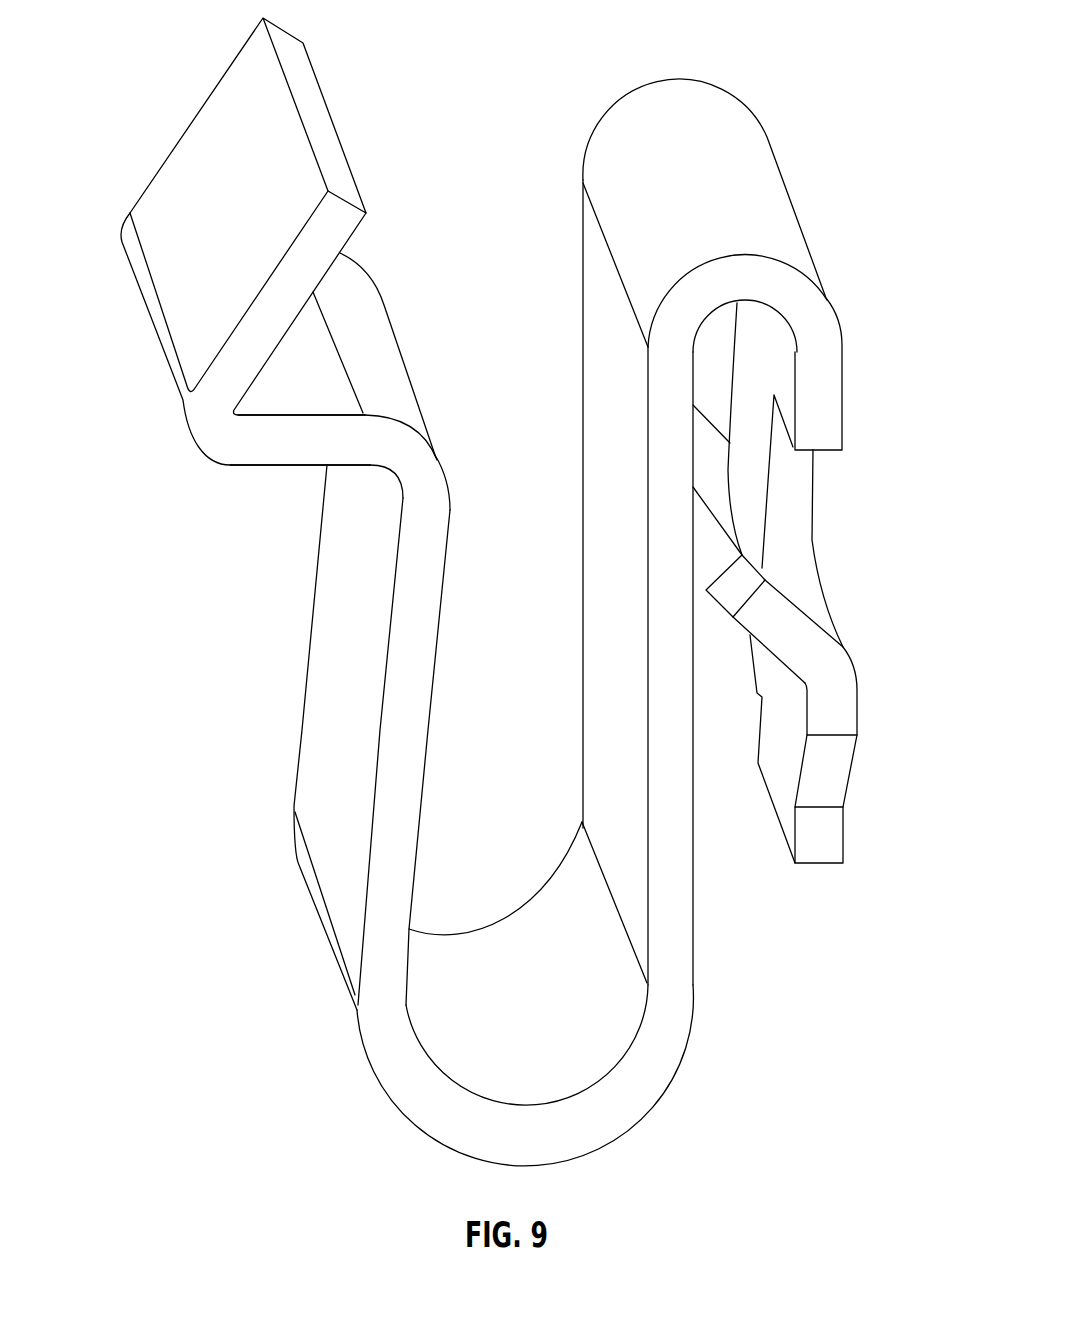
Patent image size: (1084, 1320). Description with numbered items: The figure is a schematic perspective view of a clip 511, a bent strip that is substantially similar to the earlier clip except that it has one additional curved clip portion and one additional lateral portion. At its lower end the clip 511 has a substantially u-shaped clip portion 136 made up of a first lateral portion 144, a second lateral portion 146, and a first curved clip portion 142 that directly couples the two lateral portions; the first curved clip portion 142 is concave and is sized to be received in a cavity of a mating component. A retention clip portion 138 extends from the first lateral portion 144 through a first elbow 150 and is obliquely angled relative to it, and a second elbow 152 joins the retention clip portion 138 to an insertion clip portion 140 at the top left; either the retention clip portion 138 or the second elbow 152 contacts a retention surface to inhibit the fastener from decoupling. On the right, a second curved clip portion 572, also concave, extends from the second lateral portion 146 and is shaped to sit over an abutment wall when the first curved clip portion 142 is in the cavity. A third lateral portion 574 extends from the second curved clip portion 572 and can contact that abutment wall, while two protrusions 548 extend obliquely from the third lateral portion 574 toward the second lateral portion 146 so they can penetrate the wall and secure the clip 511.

The insertion clip portion 140 is at (200, 153).
The second elbow 152 is at (205, 437).
The clip 511 is at (378, 340).
The retention clip portion 138 is at (287, 452).
The first elbow 150 is at (412, 452).
The first lateral portion 144 is at (323, 638).
The second lateral portion 146 is at (595, 602).
The substantially u-shaped clip portion 136 is at (413, 1094).
The first curved clip portion 142 is at (618, 1101).
The second curved clip portion 572 is at (772, 183).
The third lateral portion 574 is at (797, 538).
The protrusions 548 is at (720, 577).